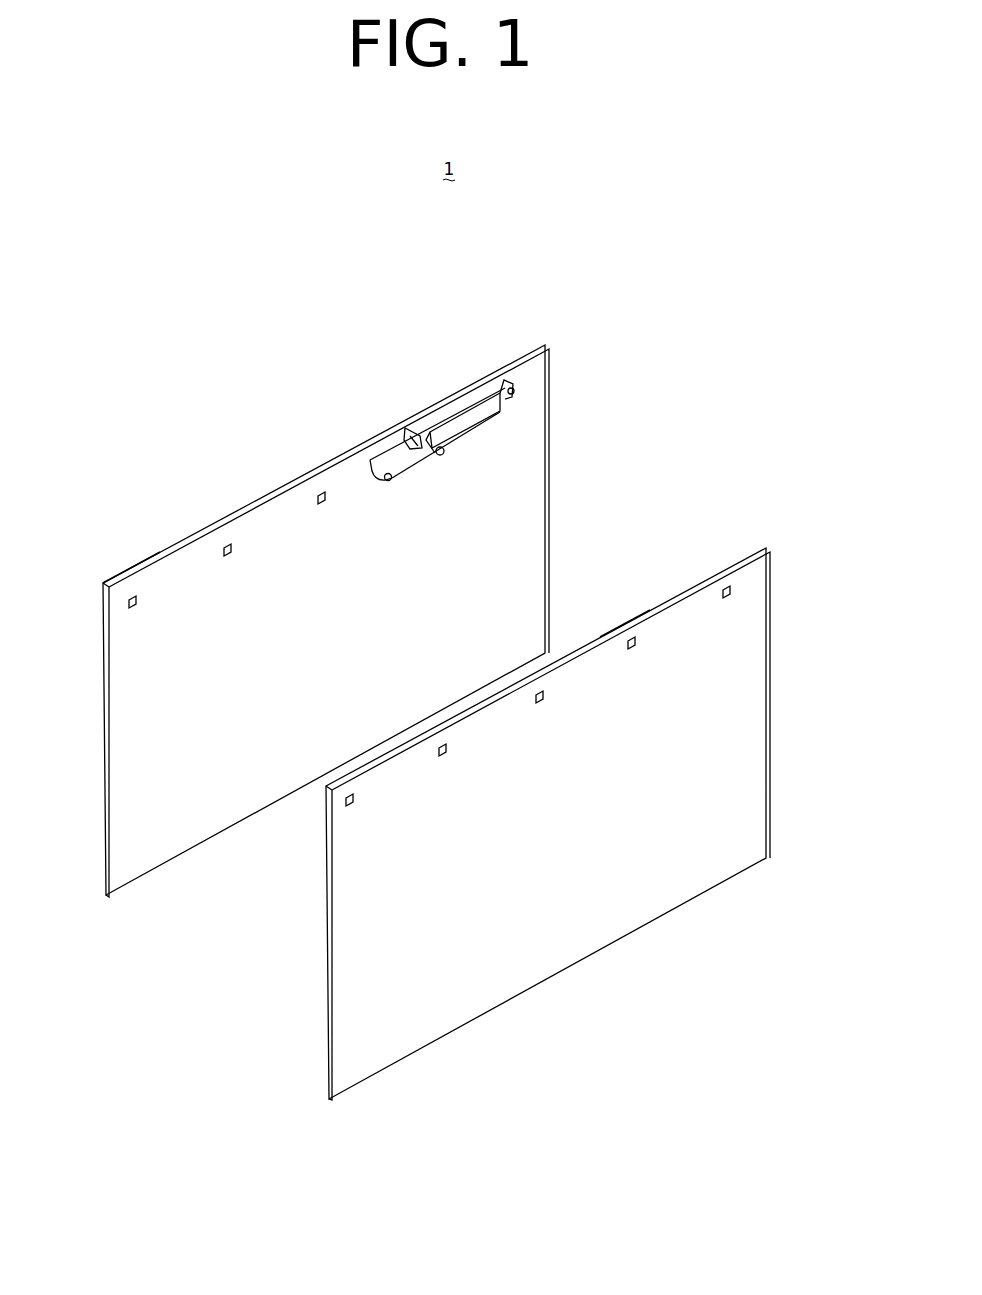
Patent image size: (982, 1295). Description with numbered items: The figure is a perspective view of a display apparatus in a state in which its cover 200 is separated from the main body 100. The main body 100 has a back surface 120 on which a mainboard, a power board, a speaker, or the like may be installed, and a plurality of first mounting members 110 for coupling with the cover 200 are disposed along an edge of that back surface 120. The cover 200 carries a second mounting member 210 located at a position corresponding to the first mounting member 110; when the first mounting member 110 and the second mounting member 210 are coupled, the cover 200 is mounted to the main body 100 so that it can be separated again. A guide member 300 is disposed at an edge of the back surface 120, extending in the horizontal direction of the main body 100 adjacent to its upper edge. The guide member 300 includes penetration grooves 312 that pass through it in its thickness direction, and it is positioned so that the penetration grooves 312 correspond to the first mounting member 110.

The main body 100 is at (310, 466).
The first mounting member 110 is at (504, 376).
The back surface 120 is at (152, 566).
The cover 200 is at (741, 548).
The second mounting member 210 is at (624, 620).
The guide member 300 is at (460, 428).
The penetration groove 312 is at (410, 426).